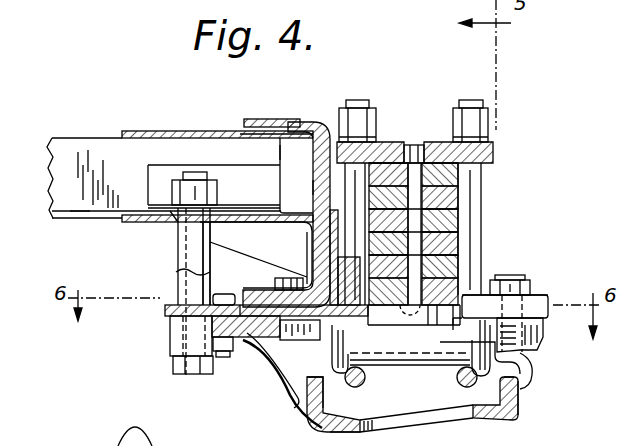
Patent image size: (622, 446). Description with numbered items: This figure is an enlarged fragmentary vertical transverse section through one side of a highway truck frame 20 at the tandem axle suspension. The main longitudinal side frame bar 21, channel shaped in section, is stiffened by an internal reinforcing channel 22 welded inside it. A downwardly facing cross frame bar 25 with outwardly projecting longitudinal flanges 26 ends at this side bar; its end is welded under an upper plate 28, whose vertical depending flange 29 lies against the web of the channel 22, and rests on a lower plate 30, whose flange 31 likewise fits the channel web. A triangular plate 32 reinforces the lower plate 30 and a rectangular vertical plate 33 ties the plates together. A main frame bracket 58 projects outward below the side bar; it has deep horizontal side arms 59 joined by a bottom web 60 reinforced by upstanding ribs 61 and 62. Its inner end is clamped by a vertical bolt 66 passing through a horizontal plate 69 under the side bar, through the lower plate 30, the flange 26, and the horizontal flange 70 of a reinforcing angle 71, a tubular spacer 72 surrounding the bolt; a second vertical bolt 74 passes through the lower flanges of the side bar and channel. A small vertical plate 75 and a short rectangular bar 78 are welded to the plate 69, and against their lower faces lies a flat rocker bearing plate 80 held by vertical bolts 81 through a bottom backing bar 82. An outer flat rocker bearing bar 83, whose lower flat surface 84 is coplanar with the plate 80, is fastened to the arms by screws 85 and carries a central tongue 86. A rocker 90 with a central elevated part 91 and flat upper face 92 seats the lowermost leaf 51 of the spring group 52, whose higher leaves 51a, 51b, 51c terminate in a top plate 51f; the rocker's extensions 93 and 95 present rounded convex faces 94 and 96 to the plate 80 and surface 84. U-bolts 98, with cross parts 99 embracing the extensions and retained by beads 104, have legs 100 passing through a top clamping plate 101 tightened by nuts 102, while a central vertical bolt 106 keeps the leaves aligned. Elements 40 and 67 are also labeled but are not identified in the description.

The frame 20 is at (300, 120).
The main longitudinal side frame bar 21 is at (268, 119).
The internal reinforcing channel 22 is at (262, 132).
The cross frame bar 25 is at (63, 138).
The longitudinal flange 26 is at (77, 214).
The upper horizontal plate 28 is at (135, 131).
The vertical depending flange 29 is at (313, 188).
The lower horizontal plate 30 is at (130, 222).
The vertical depending flange 31 is at (313, 260).
The vertical triangular plate 32 is at (180, 216).
The rectangular vertical plate 33 is at (280, 154).
The wheel 40 is at (195, 437).
The lowermost leaf 51 is at (430, 318).
The leaf 51a is at (452, 263).
The leaf 51b is at (462, 248).
The leaf 51c is at (470, 223).
The top plate 51f is at (481, 179).
The group of main leaf springs 52 is at (456, 201).
The main frame bracket 58 is at (518, 413).
The horizontal side arm 59 is at (405, 410).
The bottom web 60 is at (341, 432).
The upstanding rib 61 is at (307, 416).
The upstanding rib 62 is at (518, 393).
The vertical bolt 66 is at (186, 376).
The mounting block 67 is at (170, 341).
The horizontal plate 69 is at (166, 312).
The horizontal flange 70 is at (152, 206).
The reinforcing angle 71 is at (150, 178).
The tubular spacer 72 is at (178, 276).
The vertical bolt 74 is at (281, 281).
The small vertical rectangular plate 75 is at (312, 240).
The short rectangular bar 78 is at (352, 262).
The flat rocker bearing plate 80 is at (244, 305).
The vertical bolt 81 is at (223, 294).
The bottom backing bar 82 is at (226, 359).
The outer flat rocker bearing bar 83 is at (540, 298).
The lower flat surface 84 is at (547, 330).
The screw 85 is at (521, 280).
The central tongue 86 is at (480, 290).
The rocker 90 is at (428, 367).
The central elevated part 91 is at (443, 305).
The flat upper face 92 is at (406, 312).
The horizontal extension 93 is at (311, 368).
The rounded convex upper face 94 is at (300, 342).
The horizontal extension 95 is at (532, 355).
The rounded convex upper face 96 is at (453, 325).
The U-bolt 98 is at (362, 100).
The cross part 99 is at (363, 387).
The upstanding leg 100 is at (477, 186).
The top clamping plate 101 is at (388, 142).
The nut 102 is at (378, 121).
The rib or bead 104 is at (343, 384).
The central vertical bolt 106 is at (418, 145).